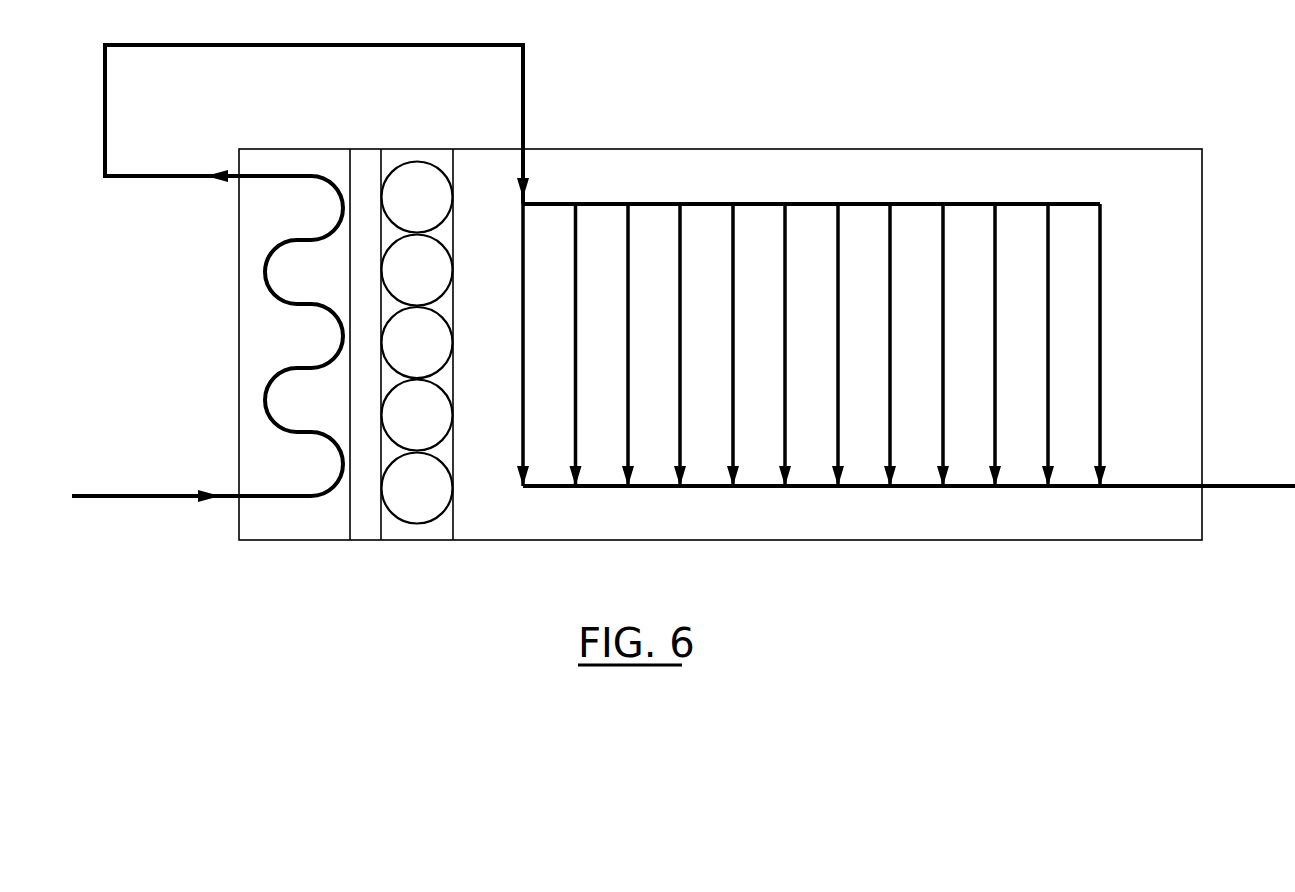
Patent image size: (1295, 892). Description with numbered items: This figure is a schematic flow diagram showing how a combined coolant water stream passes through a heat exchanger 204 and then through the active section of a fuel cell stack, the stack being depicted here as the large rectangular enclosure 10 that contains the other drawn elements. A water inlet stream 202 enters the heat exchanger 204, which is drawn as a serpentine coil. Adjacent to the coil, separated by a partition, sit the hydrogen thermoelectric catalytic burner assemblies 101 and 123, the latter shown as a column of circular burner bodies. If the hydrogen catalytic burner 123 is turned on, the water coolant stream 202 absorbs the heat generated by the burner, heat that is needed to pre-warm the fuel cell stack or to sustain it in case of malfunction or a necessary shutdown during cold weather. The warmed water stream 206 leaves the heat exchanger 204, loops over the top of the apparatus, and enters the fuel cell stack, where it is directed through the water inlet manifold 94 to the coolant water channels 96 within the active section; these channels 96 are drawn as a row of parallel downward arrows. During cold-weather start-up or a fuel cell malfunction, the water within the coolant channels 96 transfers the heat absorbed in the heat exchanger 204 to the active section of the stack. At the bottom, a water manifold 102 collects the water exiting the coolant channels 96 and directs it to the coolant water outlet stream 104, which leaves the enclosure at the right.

The heat exchanger apparatus 10 is at (891, 167).
The water inlet manifold 94 is at (1012, 203).
The coolant water channels 96 is at (730, 440).
The hydrogen thermoelectric catalytic burner assembly 101 is at (366, 537).
The water manifold 102 is at (1150, 490).
The coolant water outlet stream 104 is at (1250, 486).
The hydrogen catalytic burner 123 is at (423, 537).
The water inlet stream 202 is at (157, 500).
The heat exchanger 204 is at (241, 345).
The water stream 206 is at (525, 99).